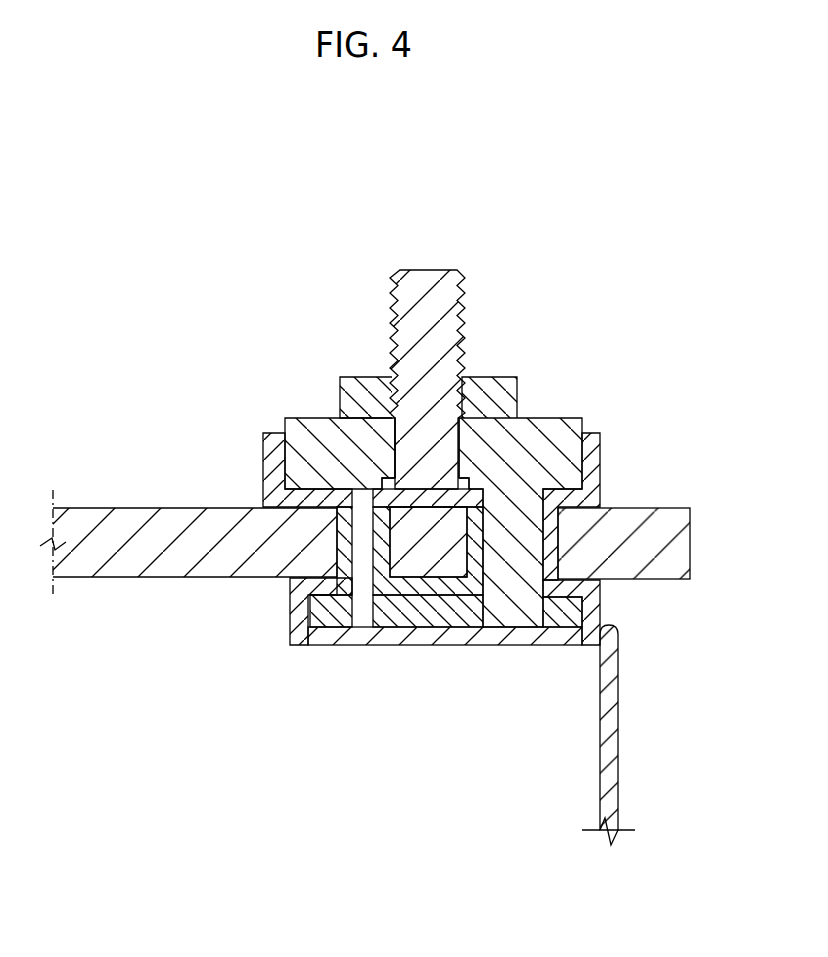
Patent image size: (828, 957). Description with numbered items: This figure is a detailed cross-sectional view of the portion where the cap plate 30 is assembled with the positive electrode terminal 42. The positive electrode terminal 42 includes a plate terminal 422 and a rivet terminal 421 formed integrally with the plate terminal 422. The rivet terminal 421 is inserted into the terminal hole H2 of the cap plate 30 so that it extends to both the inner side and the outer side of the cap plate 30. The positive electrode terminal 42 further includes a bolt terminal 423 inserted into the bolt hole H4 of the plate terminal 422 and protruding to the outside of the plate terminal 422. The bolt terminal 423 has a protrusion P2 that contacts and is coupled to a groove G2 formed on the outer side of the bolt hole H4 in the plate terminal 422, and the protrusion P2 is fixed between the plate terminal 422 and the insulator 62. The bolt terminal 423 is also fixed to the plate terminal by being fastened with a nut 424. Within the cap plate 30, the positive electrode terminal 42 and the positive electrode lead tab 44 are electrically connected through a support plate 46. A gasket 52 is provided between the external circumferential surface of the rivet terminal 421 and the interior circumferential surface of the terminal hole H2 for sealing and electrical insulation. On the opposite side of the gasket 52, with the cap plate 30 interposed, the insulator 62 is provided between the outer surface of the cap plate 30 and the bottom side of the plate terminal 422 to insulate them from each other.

The positive electrode terminal 42 is at (449, 460).
The rivet terminal 421 is at (512, 587).
The plate terminal 422 is at (433, 445).
The bolt terminal 423 is at (420, 285).
The nut 424 is at (503, 385).
The cap plate 30 is at (142, 518).
The positive electrode lead tab 44 is at (600, 770).
The support plate 46 is at (562, 620).
The gasket 52 is at (602, 603).
The insulator 62 is at (603, 453).
The terminal hole H2 is at (560, 545).
The bolt hole H4 is at (458, 448).
The groove G2 is at (384, 478).
The protrusion P2 is at (377, 483).